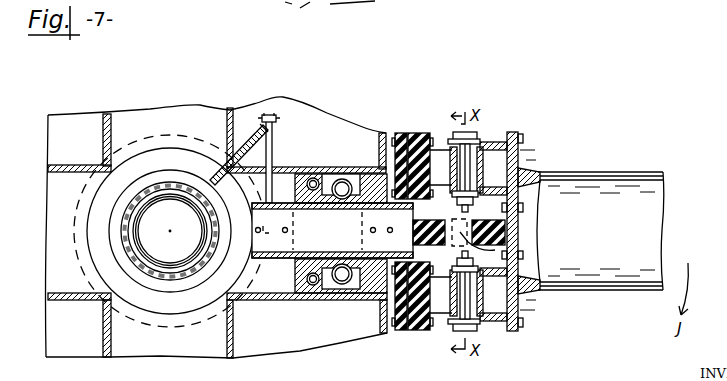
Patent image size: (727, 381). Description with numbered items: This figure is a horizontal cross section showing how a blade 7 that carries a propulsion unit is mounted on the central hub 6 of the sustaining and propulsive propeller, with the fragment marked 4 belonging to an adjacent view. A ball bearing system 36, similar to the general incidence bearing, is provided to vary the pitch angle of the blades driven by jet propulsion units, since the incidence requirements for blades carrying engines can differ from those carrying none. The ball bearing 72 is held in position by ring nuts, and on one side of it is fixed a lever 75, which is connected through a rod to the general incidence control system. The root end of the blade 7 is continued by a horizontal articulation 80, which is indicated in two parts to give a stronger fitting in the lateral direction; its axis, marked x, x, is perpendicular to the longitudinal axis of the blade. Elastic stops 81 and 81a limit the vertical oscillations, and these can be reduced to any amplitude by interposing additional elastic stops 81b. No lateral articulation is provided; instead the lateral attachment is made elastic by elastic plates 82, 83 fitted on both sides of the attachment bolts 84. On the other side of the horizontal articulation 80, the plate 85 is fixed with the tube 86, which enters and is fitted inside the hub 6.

The adjacent figure fragment 4 is at (307, 10).
The central hub 6 is at (101, 130).
The blade 7 is at (605, 185).
The ball bearing system 36 is at (168, 272).
The ball bearing 72 is at (303, 173).
The lever 75 is at (273, 152).
The horizontal articulation 80 is at (470, 300).
The elastic stop 81 is at (520, 228).
The elastic stop 81a is at (432, 266).
The additional elastic stop 81b is at (523, 255).
The elastic plate 82 is at (432, 133).
The elastic plate 83 is at (398, 138).
The attachment bolt 84 is at (400, 330).
The plate 85 is at (412, 140).
The tube 86 is at (332, 230).